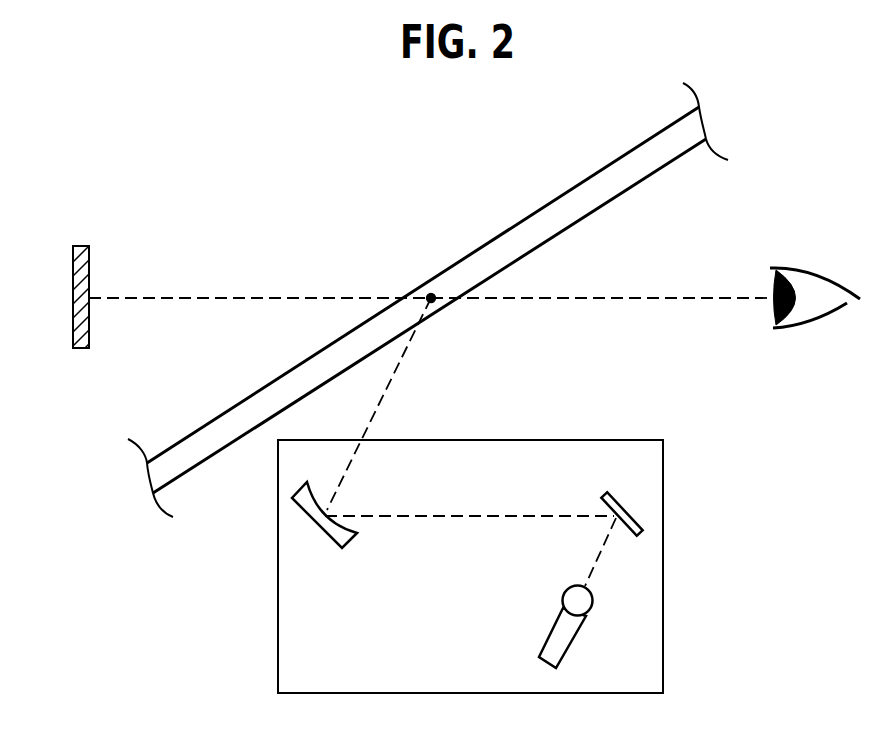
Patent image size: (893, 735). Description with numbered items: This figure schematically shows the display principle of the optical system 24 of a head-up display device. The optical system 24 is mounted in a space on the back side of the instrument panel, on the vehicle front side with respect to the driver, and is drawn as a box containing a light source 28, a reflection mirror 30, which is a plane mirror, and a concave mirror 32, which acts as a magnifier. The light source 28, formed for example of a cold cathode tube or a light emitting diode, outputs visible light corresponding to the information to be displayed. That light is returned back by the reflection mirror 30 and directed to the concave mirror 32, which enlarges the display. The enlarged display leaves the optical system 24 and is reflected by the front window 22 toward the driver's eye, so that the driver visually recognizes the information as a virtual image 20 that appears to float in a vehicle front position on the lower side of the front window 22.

The virtual image 20 is at (80, 246).
The front window 22 is at (578, 183).
The optical system 24 is at (663, 478).
The light source 28 is at (573, 642).
The reflection mirror 30 is at (640, 533).
The concave mirror 32 is at (322, 532).